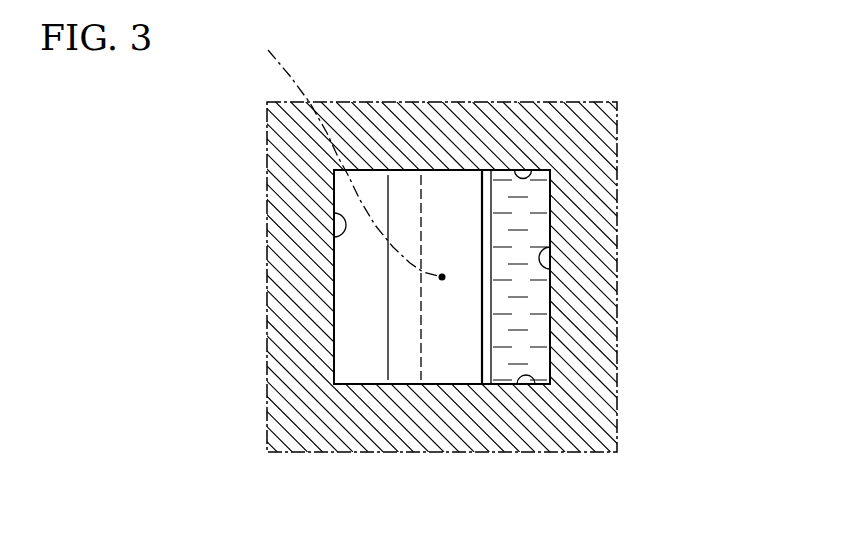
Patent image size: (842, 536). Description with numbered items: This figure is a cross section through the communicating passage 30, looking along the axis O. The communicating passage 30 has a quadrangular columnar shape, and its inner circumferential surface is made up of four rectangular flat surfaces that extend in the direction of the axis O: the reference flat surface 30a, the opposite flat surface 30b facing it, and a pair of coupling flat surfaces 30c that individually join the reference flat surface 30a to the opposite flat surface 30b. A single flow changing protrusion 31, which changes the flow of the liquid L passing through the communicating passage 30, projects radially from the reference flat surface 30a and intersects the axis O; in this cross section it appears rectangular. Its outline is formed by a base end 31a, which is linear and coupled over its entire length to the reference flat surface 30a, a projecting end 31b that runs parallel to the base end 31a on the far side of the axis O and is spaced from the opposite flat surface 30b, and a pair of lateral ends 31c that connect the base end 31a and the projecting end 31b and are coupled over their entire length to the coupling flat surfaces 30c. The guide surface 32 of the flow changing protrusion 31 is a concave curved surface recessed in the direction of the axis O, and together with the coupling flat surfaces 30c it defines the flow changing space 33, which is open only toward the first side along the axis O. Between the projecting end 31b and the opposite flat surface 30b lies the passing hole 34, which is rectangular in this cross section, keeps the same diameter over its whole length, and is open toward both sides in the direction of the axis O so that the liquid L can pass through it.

The communicating passage 30 is at (546, 187).
The reference flat surface 30a is at (334, 213).
The opposite flat surface 30b is at (550, 247).
The coupling flat surfaces 30c is at (524, 169).
The flow changing protrusion 31 is at (457, 168).
The base end 31a is at (334, 333).
The projecting end 31b is at (490, 338).
The lateral ends 31c is at (400, 169).
The guide surface 32 is at (400, 283).
The flow changing space 33 is at (342, 363).
The passing hole 34 is at (546, 307).
The liquid L is at (530, 225).
The axis O is at (345, 155).